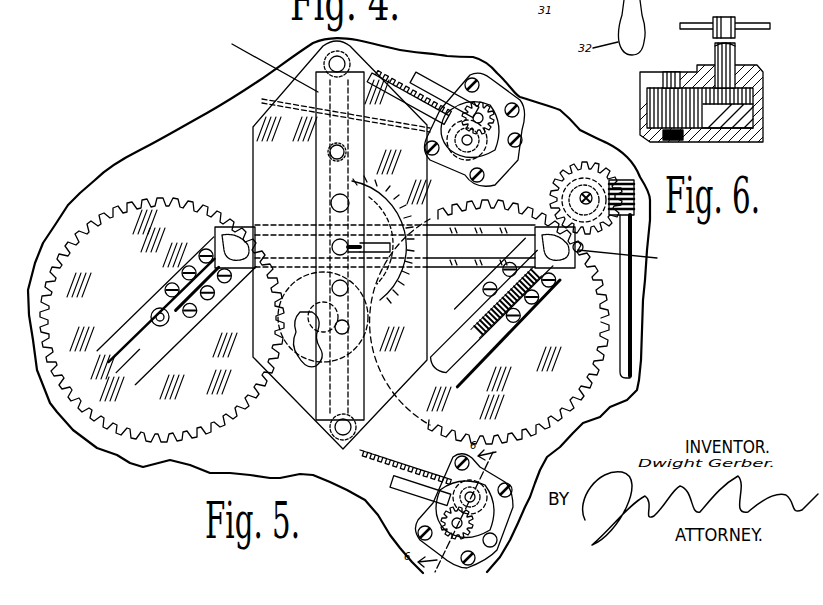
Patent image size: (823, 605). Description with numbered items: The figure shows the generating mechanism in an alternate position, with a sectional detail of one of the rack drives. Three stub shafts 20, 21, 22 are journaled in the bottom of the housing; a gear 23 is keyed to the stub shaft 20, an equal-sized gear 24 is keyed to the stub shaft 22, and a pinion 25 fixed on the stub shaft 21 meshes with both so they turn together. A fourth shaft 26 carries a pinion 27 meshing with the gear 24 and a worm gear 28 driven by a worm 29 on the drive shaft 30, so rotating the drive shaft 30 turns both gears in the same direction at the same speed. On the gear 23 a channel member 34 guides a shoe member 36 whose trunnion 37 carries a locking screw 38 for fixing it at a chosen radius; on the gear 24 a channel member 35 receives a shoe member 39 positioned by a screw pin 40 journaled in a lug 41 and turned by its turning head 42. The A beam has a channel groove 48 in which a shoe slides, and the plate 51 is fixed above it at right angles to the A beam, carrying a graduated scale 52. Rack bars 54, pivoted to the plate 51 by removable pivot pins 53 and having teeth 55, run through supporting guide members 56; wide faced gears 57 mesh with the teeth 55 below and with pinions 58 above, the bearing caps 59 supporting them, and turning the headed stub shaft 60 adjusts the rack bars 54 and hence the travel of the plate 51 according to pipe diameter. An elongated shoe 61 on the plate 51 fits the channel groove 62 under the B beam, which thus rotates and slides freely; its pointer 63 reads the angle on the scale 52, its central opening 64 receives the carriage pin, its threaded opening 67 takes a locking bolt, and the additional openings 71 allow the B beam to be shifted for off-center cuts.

In FIG. 5, the stub shaft 20 is at (152, 310).
In FIG. 5, the stub shaft 21 is at (318, 330).
In FIG. 5, the stub shaft 22 is at (480, 340).
In FIG. 5, the gear 23 is at (100, 237).
In FIG. 5, the gear 24 is at (545, 400).
In FIG. 5, the pinion 25 is at (318, 368).
In FIG. 5, the fourth shaft 26 is at (597, 188).
In FIG. 5, the pinion 27 is at (582, 158).
In FIG. 5, the worm gear 28 is at (590, 187).
In FIG. 5, the worm 29 is at (628, 178).
In FIG. 5, the drive shaft 30 is at (631, 325).
In FIG. 5, the channel member 34 is at (150, 316).
In FIG. 5, the channel member 35 is at (497, 327).
In FIG. 5, the shoe member 36 is at (230, 200).
In FIG. 5, the trunnion 37 is at (208, 298).
In FIG. 5, the locking screw 38 is at (178, 332).
In FIG. 5, the shoe member 39 is at (533, 225).
In FIG. 5, the screw pin 40 is at (547, 293).
In FIG. 5, the lug 41 is at (457, 327).
In FIG. 5, the turning head 42 is at (584, 248).
In FIG. 5, the channel groove 48 is at (457, 242).
In FIG. 5, the plate 51 is at (300, 95).
In FIG. 6, the plate 51 is at (763, 110).
In FIG. 5, the graduated scale 52 is at (453, 170).
In FIG. 5, the removable pivot pin 53 is at (328, 62).
In FIG. 5, the rack bar 54 is at (387, 73).
In FIG. 5, the teeth 55 is at (395, 78).
In FIG. 5, the supporting guide member 56 is at (420, 97).
In FIG. 5, the wide faced gear 57 is at (481, 100).
In FIG. 6, the wide faced gear 57 is at (657, 102).
In FIG. 5, the pinion 58 is at (480, 147).
In FIG. 6, the pinion 58 is at (758, 92).
In FIG. 5, the bearing cap 59 is at (519, 116).
In FIG. 6, the bearing cap 59 is at (695, 73).
In FIG. 5, the stub shaft 60 is at (462, 146).
In FIG. 6, the stub shaft 60 is at (738, 70).
In FIG. 5, the elongated shoe 61 is at (368, 318).
In FIG. 5, the channel groove 62 is at (336, 112).
In FIG. 5, the pointer 63 is at (380, 245).
In FIG. 5, the opening 64 is at (337, 240).
In FIG. 5, the threaded opening 67 is at (347, 148).
In FIG. 5, the additional opening 71 is at (338, 200).
In FIG. 5, the A beam A is at (475, 246).
In FIG. 5, the B beam B is at (278, 228).